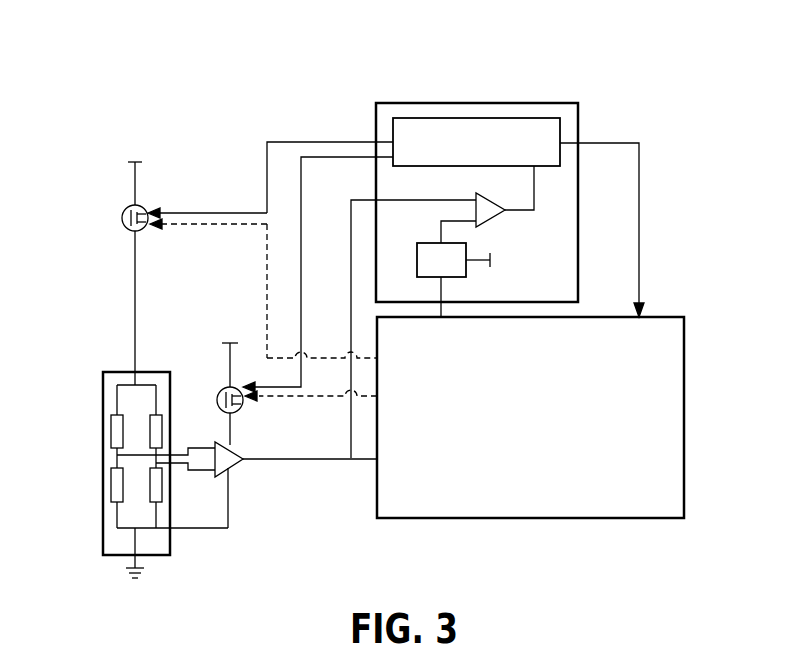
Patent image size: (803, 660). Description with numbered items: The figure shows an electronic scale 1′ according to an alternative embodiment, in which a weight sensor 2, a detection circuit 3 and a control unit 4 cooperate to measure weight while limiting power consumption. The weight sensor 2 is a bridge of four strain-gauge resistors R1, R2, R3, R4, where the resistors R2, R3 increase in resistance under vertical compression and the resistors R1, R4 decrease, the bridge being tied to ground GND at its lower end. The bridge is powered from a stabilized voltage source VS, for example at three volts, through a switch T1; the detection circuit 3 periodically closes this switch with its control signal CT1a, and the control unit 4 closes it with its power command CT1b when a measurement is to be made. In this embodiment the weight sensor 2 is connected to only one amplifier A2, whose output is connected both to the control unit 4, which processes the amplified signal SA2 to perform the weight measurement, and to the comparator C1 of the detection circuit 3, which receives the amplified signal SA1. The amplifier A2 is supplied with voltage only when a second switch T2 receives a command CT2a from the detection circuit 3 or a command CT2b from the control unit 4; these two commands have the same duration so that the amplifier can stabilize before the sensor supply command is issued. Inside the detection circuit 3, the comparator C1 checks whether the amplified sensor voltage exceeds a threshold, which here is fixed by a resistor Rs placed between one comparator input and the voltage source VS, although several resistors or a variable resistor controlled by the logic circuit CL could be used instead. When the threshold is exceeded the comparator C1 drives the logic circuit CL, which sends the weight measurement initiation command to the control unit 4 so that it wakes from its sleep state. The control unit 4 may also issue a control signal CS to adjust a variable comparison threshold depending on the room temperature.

The electronic scale 1′ is at (192, 70).
The weight sensor 2 is at (118, 372).
The detection circuit 3 is at (411, 102).
The control unit 4 is at (685, 377).
The switch T1 is at (126, 267).
The switch T2 is at (218, 394).
The resistor R1 is at (112, 432).
The resistor R2 is at (156, 425).
The resistor R3 is at (112, 487).
The resistor R4 is at (156, 490).
The amplifier A2 is at (240, 463).
The comparator C1 is at (499, 218).
The resistor Rs is at (453, 249).
The logic circuit CL is at (476, 142).
The control signal CT1a is at (267, 163).
The power command CT1b is at (262, 292).
The command CT2a is at (332, 155).
The command CT2b is at (312, 398).
The amplified signal SA1 is at (534, 190).
The amplified signal SA2 is at (351, 290).
The control signal CS is at (441, 293).
The stabilized voltage source VS is at (324, 238).
The ground GND is at (136, 584).